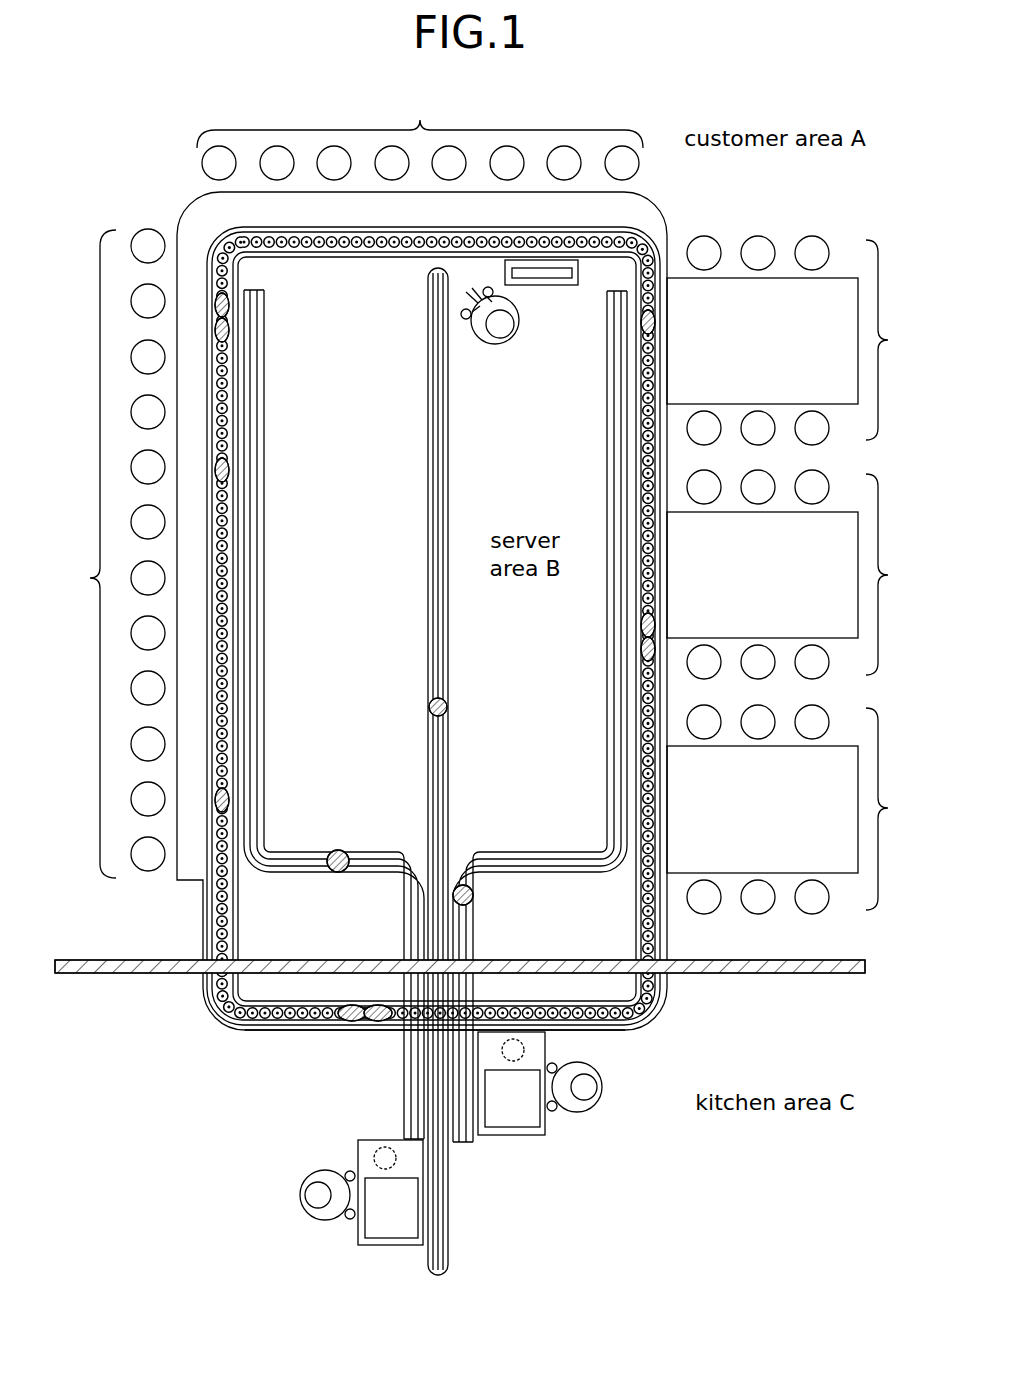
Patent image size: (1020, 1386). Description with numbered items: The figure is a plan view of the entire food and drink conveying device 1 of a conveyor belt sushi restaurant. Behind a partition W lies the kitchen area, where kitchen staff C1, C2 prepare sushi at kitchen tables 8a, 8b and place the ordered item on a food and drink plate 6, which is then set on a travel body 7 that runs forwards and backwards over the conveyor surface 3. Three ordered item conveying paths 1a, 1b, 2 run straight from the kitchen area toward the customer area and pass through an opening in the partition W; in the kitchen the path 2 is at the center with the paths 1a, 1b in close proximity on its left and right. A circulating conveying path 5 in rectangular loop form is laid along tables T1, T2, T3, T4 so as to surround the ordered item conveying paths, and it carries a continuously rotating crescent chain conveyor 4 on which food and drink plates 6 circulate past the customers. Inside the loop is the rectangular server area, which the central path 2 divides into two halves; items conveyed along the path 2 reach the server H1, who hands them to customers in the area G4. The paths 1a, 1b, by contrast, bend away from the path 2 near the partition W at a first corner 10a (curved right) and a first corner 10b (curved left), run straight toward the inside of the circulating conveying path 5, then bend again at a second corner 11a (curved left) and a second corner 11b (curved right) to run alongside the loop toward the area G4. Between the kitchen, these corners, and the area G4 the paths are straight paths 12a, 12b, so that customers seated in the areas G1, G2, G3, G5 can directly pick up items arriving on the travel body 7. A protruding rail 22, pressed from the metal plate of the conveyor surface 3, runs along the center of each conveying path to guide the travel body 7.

The food and drink conveying device 1 is at (435, 784).
The ordered item conveying path 1a is at (474, 1151).
The ordered item conveying path 1b is at (402, 1121).
The ordered item conveying path 2 is at (456, 1230).
The conveyor surface 3 is at (530, 858).
The crescent chain conveyor 4 is at (213, 1000).
The circulating conveying path 5 is at (258, 1038).
The food and drink plate 6 is at (345, 1025).
The travel body 7 is at (339, 850).
The kitchen table 8a is at (383, 1247).
The kitchen table 8b is at (530, 1135).
The first corner 10a is at (463, 851).
The first corner 10b is at (412, 851).
The second corner 11a is at (600, 843).
The second corner 11b is at (270, 843).
The straight path 12a is at (540, 738).
The straight path 12b is at (334, 718).
The rail 22 is at (435, 772).
The kitchen staff C1 is at (602, 1087).
The kitchen staff C2 is at (300, 1195).
The area G1 is at (801, 340).
The area G2 is at (801, 574).
The area G3 is at (801, 809).
The area G4 is at (420, 135).
The area G5 is at (107, 553).
The server H1 is at (508, 345).
The table T1 is at (762, 341).
The table T2 is at (762, 575).
The table T3 is at (762, 809).
The table T4 is at (641, 216).
The partition W is at (785, 975).